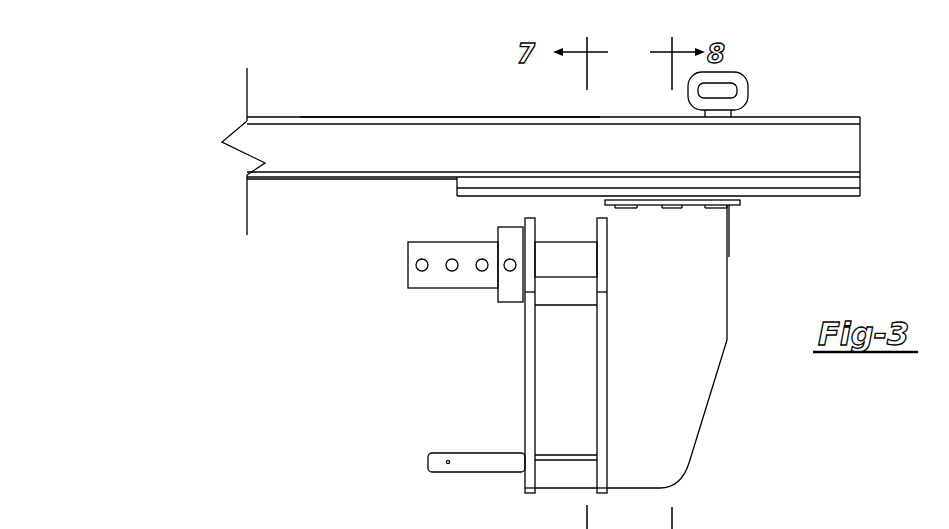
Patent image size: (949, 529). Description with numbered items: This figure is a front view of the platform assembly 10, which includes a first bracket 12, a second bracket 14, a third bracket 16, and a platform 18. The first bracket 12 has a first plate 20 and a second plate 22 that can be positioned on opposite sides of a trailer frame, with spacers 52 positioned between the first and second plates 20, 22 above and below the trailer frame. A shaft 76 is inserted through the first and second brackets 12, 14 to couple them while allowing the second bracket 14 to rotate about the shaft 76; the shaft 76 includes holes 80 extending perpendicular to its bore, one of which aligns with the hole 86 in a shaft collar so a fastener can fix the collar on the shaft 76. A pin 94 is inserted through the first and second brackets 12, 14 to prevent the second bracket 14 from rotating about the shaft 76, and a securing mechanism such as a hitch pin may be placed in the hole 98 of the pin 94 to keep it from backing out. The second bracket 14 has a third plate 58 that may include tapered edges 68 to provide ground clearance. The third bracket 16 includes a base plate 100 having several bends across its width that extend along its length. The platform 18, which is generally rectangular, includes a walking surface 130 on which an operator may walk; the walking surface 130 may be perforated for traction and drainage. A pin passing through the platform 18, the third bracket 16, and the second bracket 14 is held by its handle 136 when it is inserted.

The platform assembly 10 is at (850, 74).
The first bracket 12 is at (458, 363).
The second bracket 14 is at (756, 252).
The third bracket 16 is at (872, 157).
The platform 18 is at (351, 104).
The first plate 20 is at (527, 392).
The second plate 22 is at (597, 413).
The spacers 52 is at (565, 305).
The third plate 58 is at (700, 299).
The tapered edges 68 is at (710, 388).
The shaft 76 is at (567, 247).
The holes 80 is at (482, 271).
The hole 86 is at (510, 272).
The pin 94 is at (486, 464).
The hole 98 is at (448, 458).
The base plate 100 is at (847, 183).
The walking surface 130 is at (458, 117).
The handle 136 is at (748, 92).